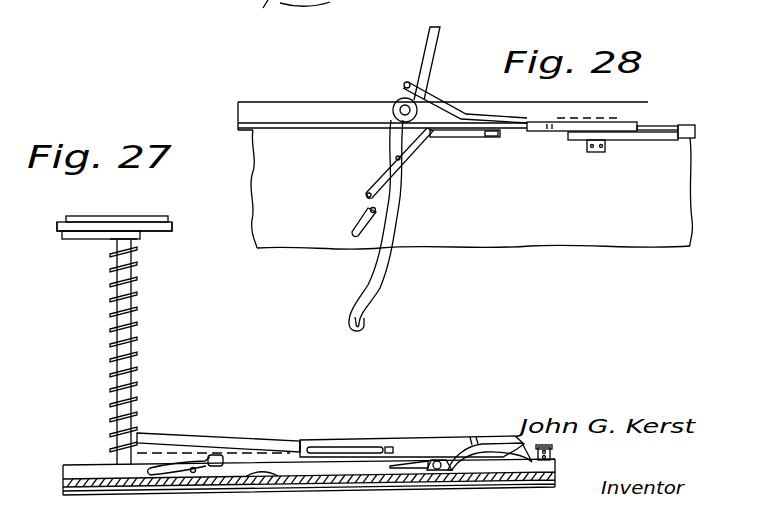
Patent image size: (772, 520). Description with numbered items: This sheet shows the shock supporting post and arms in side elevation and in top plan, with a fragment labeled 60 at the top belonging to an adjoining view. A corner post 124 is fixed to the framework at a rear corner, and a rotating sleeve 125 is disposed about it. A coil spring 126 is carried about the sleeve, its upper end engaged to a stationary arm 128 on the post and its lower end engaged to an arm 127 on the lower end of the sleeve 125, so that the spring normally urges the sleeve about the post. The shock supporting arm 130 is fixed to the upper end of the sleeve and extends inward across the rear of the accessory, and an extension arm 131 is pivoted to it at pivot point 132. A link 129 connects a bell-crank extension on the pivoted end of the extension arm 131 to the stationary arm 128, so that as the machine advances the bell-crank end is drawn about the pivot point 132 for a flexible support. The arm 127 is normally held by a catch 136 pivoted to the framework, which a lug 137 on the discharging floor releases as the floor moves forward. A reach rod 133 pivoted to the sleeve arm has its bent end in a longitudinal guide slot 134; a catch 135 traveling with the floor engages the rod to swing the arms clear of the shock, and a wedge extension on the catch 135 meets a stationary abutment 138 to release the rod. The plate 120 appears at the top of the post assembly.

In FIG. 28, the part of adjacent figure 60 is at (292, 14).
In FIG. 27, the plate 120 is at (157, 232).
In FIG. 28, the corner post 124 is at (398, 105).
In FIG. 27, the rotating sleeve 125 is at (137, 383).
In FIG. 27, the coil spring 126 is at (112, 387).
In FIG. 27, the arm 127 is at (183, 455).
In FIG. 28, the arm 127 is at (443, 47).
In FIG. 28, the stationary arm 128 is at (425, 133).
In FIG. 27, the link 129 is at (158, 221).
In FIG. 28, the link 129 is at (398, 158).
In FIG. 27, the shock supporting arm 130 is at (100, 234).
In FIG. 28, the shock supporting arm 130 is at (400, 201).
In FIG. 27, the extension arm 131 is at (87, 224).
In FIG. 28, the extension arm 131 is at (370, 292).
In FIG. 28, the pivot point 132 is at (406, 82).
In FIG. 27, the reach rod 133 is at (280, 450).
In FIG. 28, the reach rod 133 is at (443, 97).
In FIG. 27, the guide slot 134 is at (433, 437).
In FIG. 27, the catch 135 is at (450, 471).
In FIG. 27, the catch 136 is at (218, 466).
In FIG. 27, the lug 137 is at (283, 478).
In FIG. 27, the stationary abutment 138 is at (537, 463).